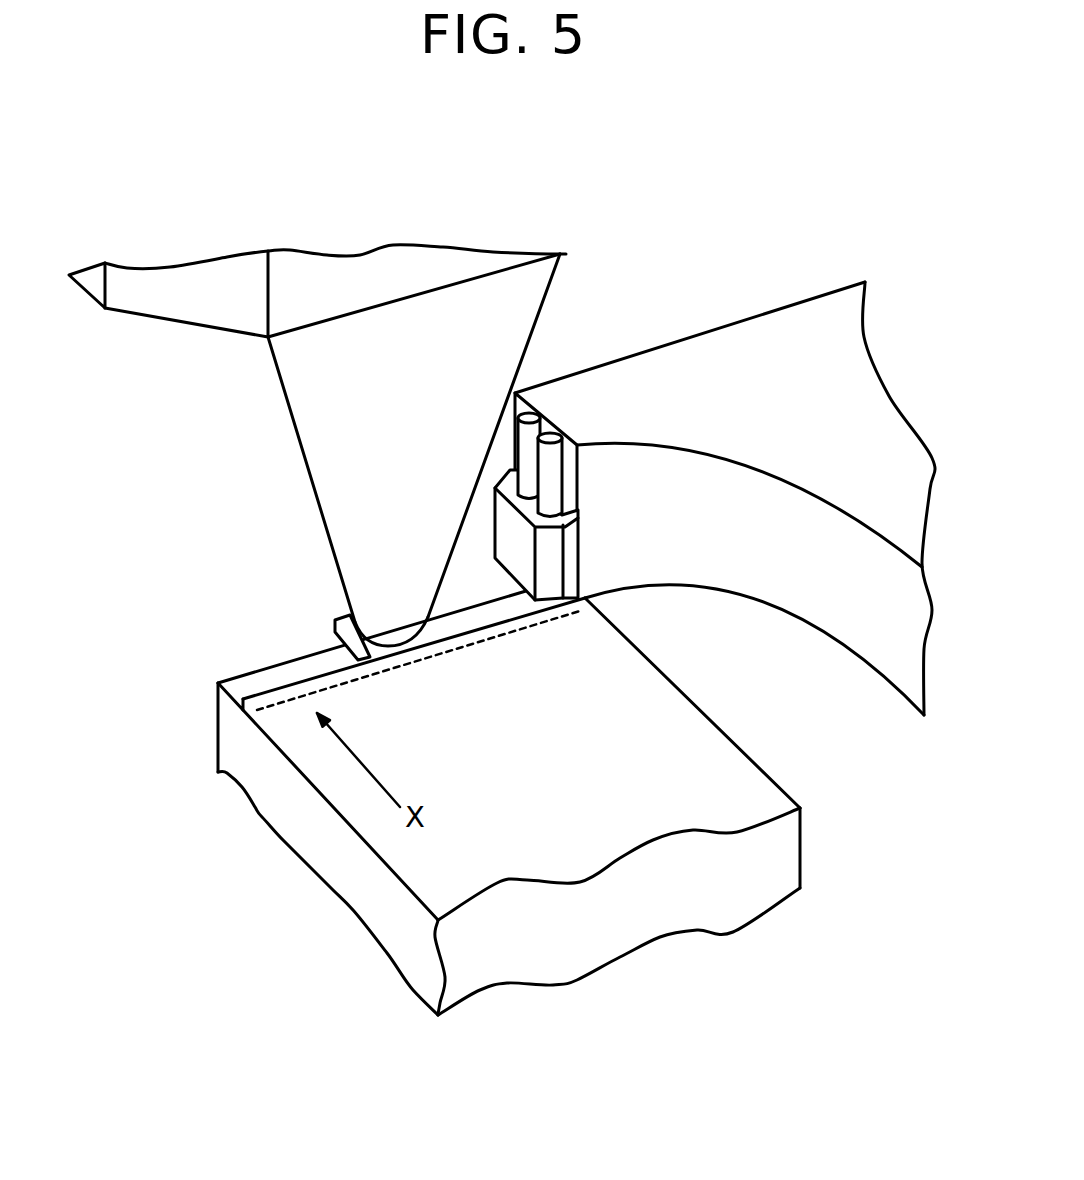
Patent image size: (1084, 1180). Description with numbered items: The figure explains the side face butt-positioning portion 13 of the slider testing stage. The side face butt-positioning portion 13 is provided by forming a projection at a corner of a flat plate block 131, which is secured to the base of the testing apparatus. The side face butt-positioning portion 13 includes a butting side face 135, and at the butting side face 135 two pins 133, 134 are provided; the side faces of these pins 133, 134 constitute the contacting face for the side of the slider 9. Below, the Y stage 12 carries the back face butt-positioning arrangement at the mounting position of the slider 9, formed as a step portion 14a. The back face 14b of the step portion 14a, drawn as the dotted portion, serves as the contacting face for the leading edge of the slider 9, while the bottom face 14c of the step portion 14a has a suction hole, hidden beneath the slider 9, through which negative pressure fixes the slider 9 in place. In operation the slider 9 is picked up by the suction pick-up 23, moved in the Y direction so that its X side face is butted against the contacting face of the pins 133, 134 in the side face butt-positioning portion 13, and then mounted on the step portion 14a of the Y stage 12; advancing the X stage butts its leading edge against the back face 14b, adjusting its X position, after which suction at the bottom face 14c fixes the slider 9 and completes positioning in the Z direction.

The slider 9 is at (335, 630).
The Y stage 12 is at (733, 770).
The side face butt-positioning portion 13 is at (457, 436).
The step portion 14a is at (283, 678).
The back face 14b is at (483, 641).
The bottom face 14c is at (237, 686).
The suction pick-up 23 is at (308, 397).
The flat plate block 131 is at (817, 322).
The pin 133 is at (528, 413).
The pin 134 is at (525, 504).
The butting side face 135 is at (568, 487).